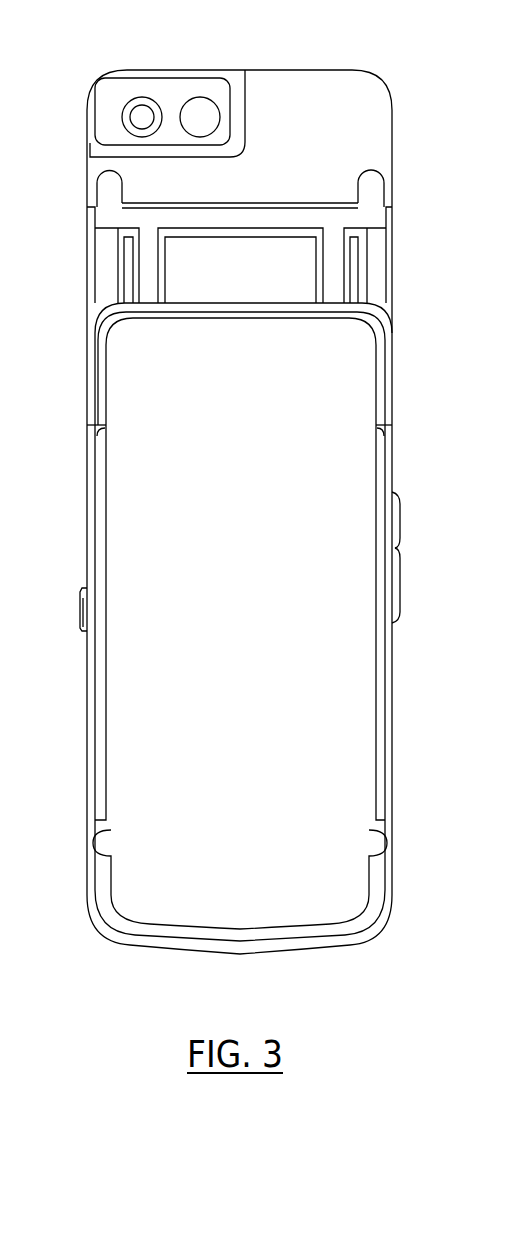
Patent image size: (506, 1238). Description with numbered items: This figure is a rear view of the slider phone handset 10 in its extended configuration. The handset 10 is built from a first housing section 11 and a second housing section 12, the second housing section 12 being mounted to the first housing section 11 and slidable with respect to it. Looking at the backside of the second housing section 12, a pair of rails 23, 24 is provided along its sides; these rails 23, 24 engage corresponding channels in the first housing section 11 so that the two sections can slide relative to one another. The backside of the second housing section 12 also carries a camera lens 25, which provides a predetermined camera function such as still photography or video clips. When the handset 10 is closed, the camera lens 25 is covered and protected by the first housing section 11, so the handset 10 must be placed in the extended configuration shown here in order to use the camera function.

The handset 10 is at (410, 70).
The first housing section 11 is at (358, 402).
The second housing section 12 is at (377, 130).
The rail 23 is at (128, 268).
The rail 24 is at (353, 284).
The camera lens 25 is at (142, 112).